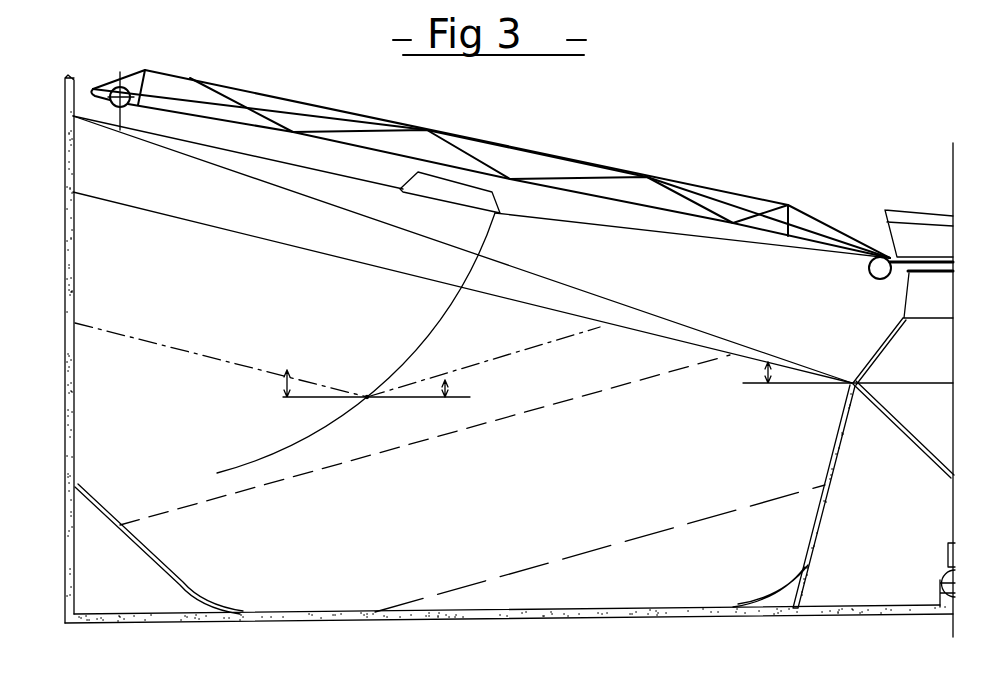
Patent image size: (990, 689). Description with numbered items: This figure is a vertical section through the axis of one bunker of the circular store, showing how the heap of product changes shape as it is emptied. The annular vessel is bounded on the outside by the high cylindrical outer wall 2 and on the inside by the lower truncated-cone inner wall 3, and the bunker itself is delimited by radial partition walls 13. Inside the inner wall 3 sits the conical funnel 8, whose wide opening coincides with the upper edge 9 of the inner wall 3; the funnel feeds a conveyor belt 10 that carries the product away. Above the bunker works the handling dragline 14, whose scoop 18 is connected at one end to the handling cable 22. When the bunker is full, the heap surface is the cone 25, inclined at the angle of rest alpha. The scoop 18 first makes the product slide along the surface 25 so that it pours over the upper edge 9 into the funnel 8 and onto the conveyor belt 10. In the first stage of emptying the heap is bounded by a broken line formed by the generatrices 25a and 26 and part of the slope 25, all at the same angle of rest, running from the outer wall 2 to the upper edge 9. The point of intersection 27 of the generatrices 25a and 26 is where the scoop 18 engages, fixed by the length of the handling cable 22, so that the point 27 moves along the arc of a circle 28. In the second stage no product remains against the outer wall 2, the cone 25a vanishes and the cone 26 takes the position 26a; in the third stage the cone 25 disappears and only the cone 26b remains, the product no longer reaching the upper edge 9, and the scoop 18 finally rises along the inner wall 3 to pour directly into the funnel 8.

The outer cylindrical wall 2 is at (65, 462).
The inner wall 3 is at (830, 463).
The conical funnel 8 is at (901, 437).
The upper edge 9 is at (851, 380).
The conveyor belt 10 is at (938, 580).
The radial partition wall 13 is at (650, 318).
The handling dragline 14 is at (905, 225).
The scoop 18 is at (500, 213).
The handling cable 22 is at (303, 165).
The cone surface of the heap 25 is at (213, 227).
The generatrix segment 25a is at (213, 360).
The generatrix segment 26 is at (490, 356).
The second-stage cone position 26a is at (554, 400).
The third-stage cone 26b is at (645, 537).
The point of intersection 27 is at (371, 399).
The arc of a circle 28 is at (426, 338).